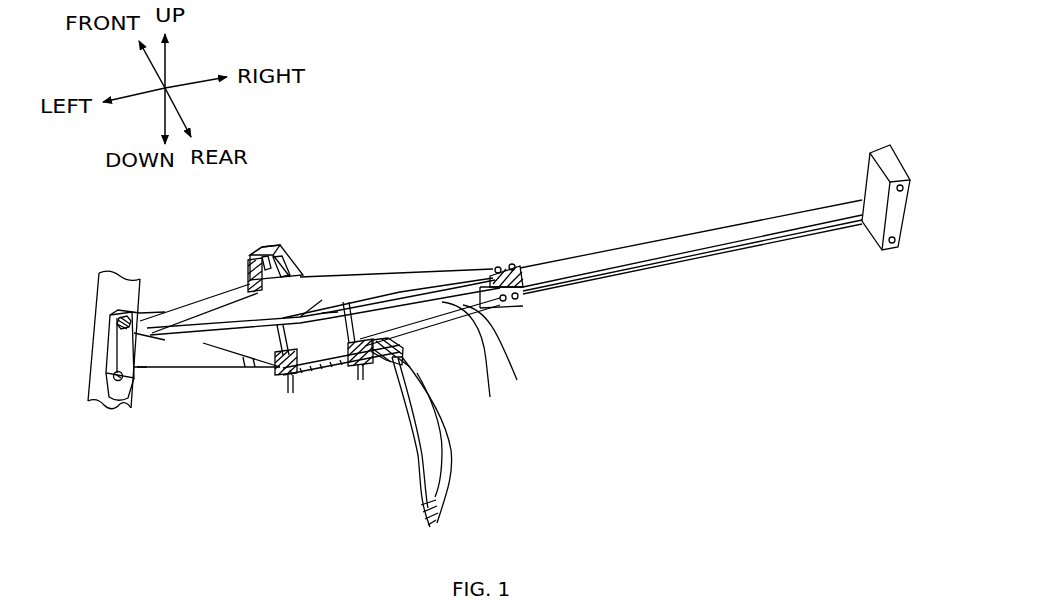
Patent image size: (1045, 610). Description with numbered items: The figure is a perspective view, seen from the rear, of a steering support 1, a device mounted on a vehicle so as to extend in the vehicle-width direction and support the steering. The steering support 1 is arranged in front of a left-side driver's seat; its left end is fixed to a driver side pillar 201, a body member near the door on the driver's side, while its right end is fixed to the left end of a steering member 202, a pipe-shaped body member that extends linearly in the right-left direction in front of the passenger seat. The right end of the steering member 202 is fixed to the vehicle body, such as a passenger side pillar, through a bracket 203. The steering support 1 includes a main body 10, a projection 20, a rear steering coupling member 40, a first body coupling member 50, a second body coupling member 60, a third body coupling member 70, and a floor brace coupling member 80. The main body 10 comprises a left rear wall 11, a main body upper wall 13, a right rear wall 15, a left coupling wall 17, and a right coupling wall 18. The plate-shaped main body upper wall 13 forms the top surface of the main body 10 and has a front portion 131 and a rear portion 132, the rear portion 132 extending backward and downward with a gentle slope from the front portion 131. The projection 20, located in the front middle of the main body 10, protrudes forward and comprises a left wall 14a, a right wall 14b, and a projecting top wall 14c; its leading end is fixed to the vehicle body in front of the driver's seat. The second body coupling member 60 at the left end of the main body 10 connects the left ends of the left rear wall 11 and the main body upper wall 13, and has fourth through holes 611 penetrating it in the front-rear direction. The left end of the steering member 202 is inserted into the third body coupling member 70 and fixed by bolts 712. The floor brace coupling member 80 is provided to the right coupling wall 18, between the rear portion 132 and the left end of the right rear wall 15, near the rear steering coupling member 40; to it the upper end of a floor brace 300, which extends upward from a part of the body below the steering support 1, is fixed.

The steering support 1 is at (378, 193).
The main body 10 is at (418, 265).
The left rear wall 11 is at (188, 363).
The main body upper wall 13 is at (235, 312).
The left wall 14a is at (247, 263).
The right wall 14b is at (294, 256).
The projecting top wall 14c is at (280, 246).
The right rear wall 15 is at (517, 380).
The left coupling wall 17 is at (238, 345).
The right coupling wall 18 is at (490, 397).
The projection 20 is at (285, 245).
The rear steering coupling member 40 is at (350, 373).
The first body coupling member 50 is at (251, 249).
The second body coupling member 60 is at (93, 371).
The third body coupling member 70 is at (508, 310).
The floor brace coupling member 80 is at (411, 352).
The front portion 131 is at (322, 300).
The rear portion 132 is at (330, 313).
The driver side pillar 201 is at (101, 296).
The steering member 202 is at (703, 268).
The bracket 203 is at (906, 221).
The floor brace 300 is at (455, 449).
The fourth through hole 611 is at (116, 322).
The bolt 712 is at (504, 268).